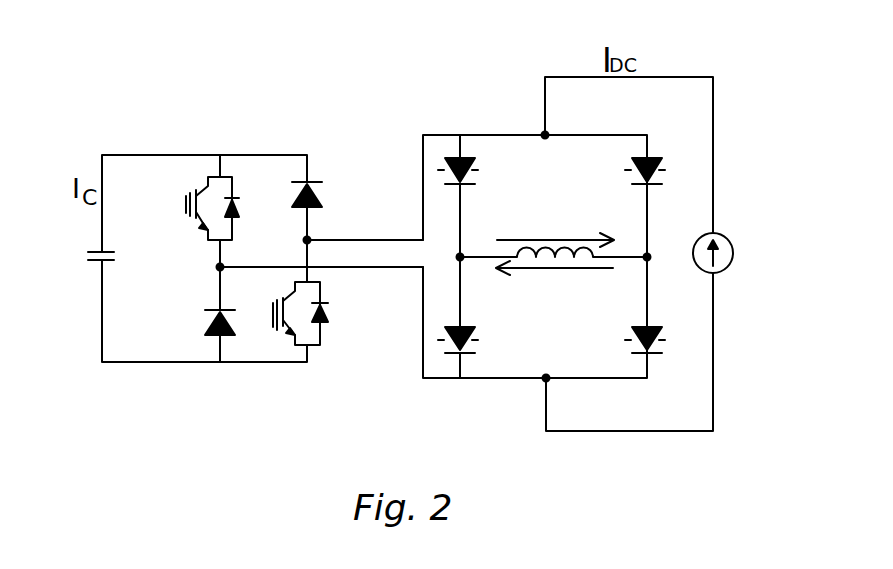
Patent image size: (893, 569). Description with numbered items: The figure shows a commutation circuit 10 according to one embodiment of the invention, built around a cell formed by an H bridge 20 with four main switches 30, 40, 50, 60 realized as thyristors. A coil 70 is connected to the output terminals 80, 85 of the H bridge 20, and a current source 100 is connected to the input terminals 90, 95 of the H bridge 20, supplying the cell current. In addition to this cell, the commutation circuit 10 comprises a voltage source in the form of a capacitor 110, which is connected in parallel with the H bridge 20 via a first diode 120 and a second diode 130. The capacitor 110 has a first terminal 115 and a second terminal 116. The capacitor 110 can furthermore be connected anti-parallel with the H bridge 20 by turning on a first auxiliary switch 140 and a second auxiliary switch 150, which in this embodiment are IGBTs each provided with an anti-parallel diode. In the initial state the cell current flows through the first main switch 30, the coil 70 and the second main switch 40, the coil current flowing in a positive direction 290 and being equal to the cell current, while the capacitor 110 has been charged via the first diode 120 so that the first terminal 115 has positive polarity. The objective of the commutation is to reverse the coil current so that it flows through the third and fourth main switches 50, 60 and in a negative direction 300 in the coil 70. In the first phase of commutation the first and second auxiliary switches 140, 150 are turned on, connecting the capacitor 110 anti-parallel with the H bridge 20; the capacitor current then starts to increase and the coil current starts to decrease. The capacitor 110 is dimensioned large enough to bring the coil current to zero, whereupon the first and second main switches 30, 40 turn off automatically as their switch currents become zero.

The commutation circuit 10 is at (190, 70).
The H bridge 20 is at (463, 210).
The first main switch 30 is at (477, 171).
The second main switch 40 is at (631, 339).
The third main switch 50 is at (631, 170).
The fourth main switch 60 is at (478, 340).
The coil 70 is at (553, 248).
The output terminal 80 is at (461, 259).
The output terminal 85 is at (645, 260).
The input terminal 90 is at (543, 133).
The input terminal 95 is at (545, 380).
The current source 100 is at (733, 256).
The capacitor 110 is at (99, 264).
The first terminal 115 is at (92, 251).
The second terminal 116 is at (93, 262).
The first diode 120 is at (320, 196).
The second diode 130 is at (207, 325).
The first auxiliary switch 140 is at (199, 188).
The second auxiliary switch 150 is at (289, 299).
The positive direction 290 is at (595, 238).
The negative direction 300 is at (532, 268).